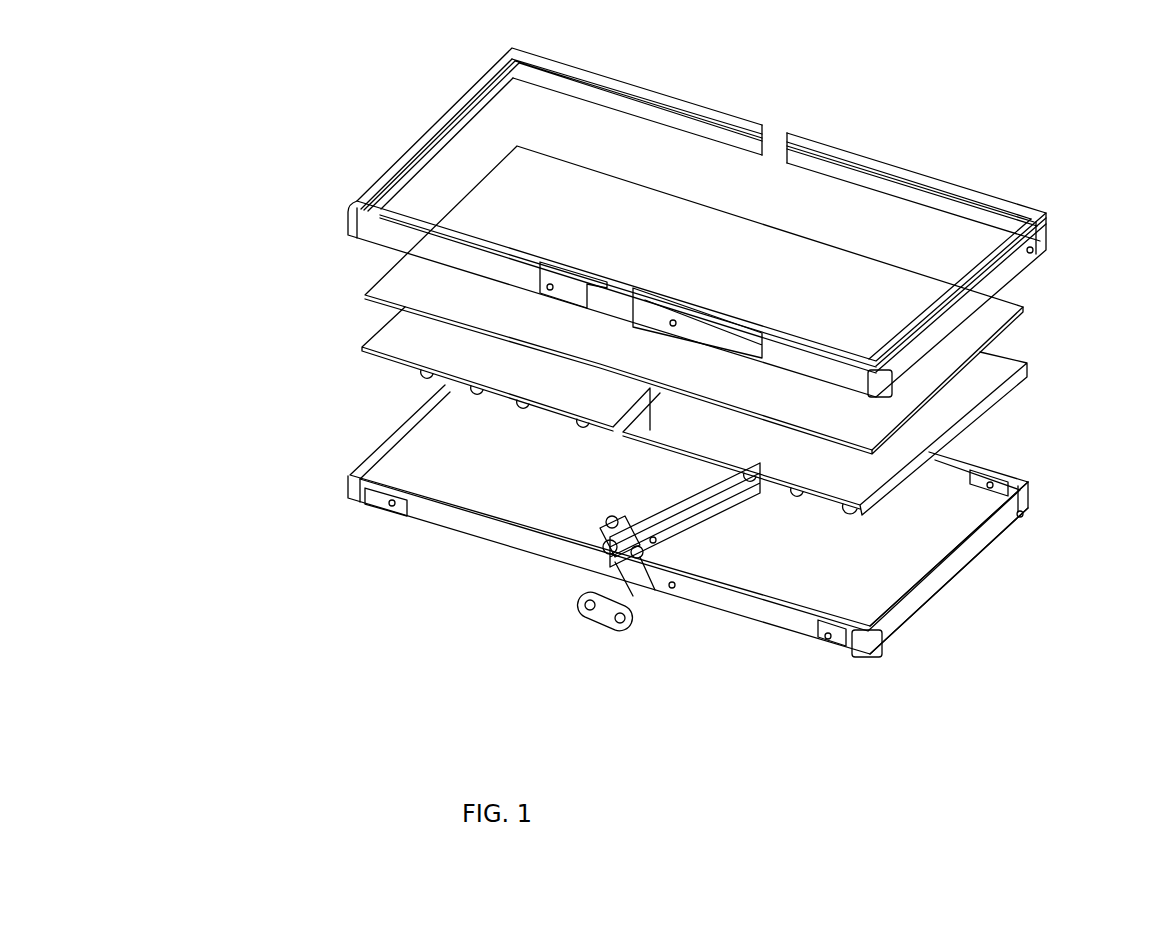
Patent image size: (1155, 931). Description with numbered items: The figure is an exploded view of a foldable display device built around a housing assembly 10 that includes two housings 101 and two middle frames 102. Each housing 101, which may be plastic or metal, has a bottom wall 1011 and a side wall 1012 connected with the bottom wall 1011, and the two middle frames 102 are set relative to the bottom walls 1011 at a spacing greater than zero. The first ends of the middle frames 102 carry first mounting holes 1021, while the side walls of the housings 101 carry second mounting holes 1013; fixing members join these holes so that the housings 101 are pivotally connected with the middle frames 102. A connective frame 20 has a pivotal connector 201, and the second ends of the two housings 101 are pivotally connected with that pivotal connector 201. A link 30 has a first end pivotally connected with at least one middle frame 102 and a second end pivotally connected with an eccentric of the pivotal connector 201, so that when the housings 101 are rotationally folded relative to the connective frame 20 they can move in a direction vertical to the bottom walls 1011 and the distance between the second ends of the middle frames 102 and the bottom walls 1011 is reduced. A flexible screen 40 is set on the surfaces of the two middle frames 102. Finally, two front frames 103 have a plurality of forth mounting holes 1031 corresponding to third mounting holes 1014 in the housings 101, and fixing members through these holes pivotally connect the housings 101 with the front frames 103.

The housing assembly 10 is at (212, 58).
The housing 101 is at (363, 408).
The bottom wall 1011 is at (435, 460).
The side wall 1012 is at (960, 567).
The second mounting hole 1013 is at (831, 649).
The third mounting hole 1014 is at (1024, 518).
The middle frame 102 is at (400, 340).
The first mounting hole 1021 is at (854, 515).
The front frame 103 is at (430, 130).
The forth mounting hole 1031 is at (1041, 260).
The connective frame 20 is at (590, 623).
The pivotal connector 201 is at (612, 533).
The link 30 is at (605, 565).
The flexible screen 40 is at (985, 329).